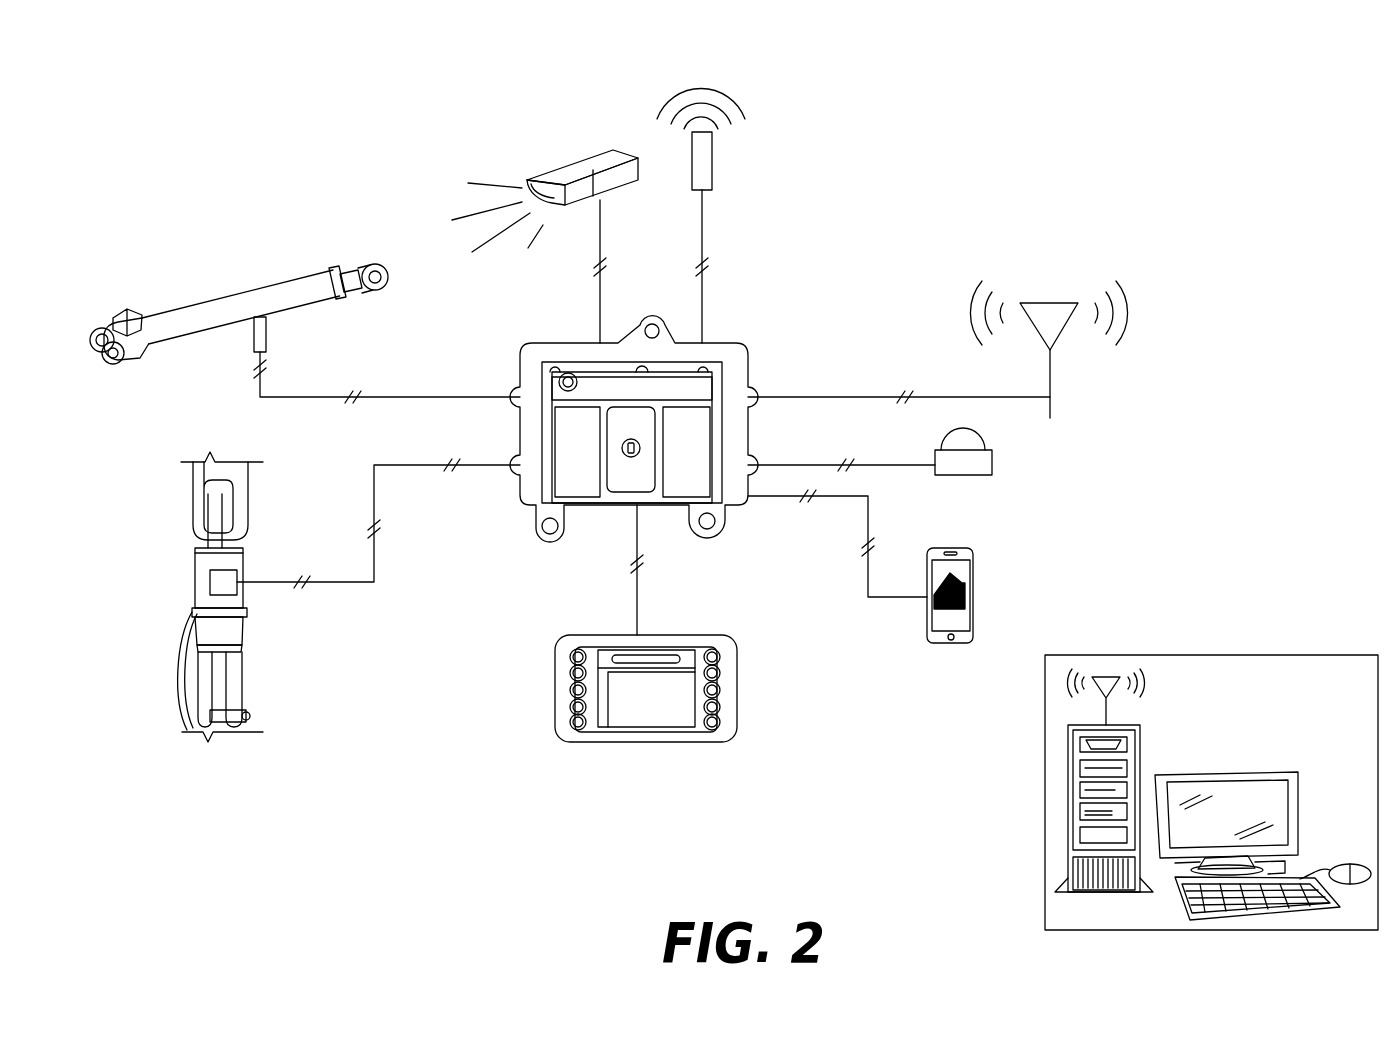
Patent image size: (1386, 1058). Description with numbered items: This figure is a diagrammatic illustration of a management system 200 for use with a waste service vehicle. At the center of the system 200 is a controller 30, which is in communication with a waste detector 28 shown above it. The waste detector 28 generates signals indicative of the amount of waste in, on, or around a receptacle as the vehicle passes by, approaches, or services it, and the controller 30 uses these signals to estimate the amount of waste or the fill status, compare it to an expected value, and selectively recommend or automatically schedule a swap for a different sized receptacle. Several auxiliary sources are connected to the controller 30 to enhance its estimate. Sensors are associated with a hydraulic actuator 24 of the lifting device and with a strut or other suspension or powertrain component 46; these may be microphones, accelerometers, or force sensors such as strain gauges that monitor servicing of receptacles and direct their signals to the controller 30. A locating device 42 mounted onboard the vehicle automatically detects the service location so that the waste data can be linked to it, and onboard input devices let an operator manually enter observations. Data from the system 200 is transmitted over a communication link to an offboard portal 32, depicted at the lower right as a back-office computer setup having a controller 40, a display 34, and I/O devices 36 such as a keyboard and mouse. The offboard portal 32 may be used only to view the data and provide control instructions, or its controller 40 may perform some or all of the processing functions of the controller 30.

The management system 200 is at (978, 100).
The actuator 24 is at (180, 303).
The waste detector 28 is at (593, 150).
The controller 30 is at (753, 353).
The offboard portal 32 is at (1045, 870).
The display 34 is at (1265, 772).
The I/O device 36 is at (1328, 866).
The controller 40 is at (1140, 757).
The locating device 42 is at (992, 462).
The suspension or powertrain component 46 is at (247, 620).